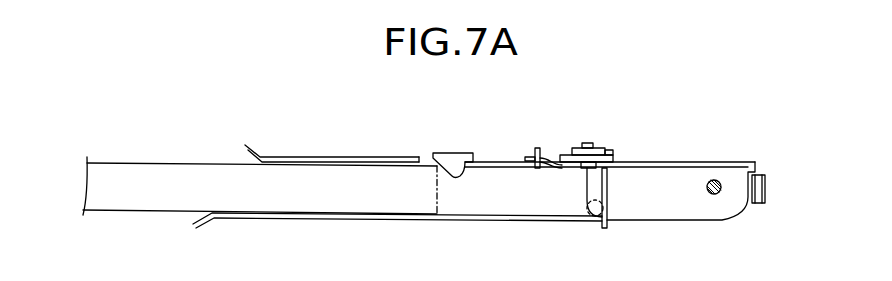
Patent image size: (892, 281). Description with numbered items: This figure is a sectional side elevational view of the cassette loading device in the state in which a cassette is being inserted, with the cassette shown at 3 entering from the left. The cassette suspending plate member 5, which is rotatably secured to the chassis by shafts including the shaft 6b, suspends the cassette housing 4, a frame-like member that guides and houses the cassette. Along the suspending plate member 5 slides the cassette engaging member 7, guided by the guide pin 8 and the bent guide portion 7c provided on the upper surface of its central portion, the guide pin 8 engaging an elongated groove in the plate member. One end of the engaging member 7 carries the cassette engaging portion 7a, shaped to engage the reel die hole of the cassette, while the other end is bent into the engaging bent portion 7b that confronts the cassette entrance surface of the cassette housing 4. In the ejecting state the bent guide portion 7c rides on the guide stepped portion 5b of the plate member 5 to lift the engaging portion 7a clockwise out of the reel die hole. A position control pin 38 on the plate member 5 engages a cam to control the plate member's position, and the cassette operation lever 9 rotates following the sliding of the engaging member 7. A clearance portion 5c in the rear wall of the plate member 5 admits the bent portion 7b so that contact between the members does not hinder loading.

The tube 3 is at (164, 163).
The cassette housing 4 is at (317, 157).
The cassette suspending plate member 5 is at (720, 162).
The guide stepped portion 5b is at (549, 157).
The clearance portion 5c is at (766, 188).
The shaft 6b is at (720, 195).
The cassette engaging member 7 is at (507, 170).
The cassette engaging portion 7a is at (443, 153).
The engaging bent portion 7b is at (610, 178).
The bent guide portion 7c is at (537, 148).
The guide pin 8 is at (588, 143).
The cassette operation lever 9 is at (610, 152).
The position control pin 38 is at (593, 217).